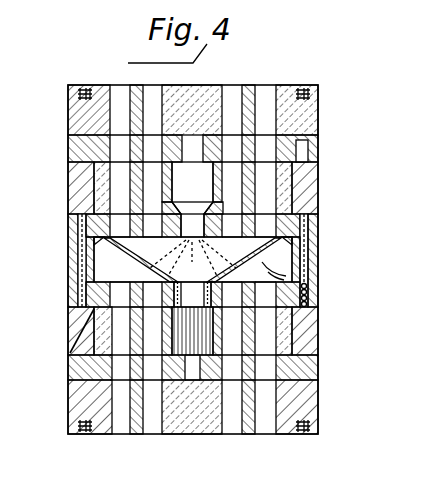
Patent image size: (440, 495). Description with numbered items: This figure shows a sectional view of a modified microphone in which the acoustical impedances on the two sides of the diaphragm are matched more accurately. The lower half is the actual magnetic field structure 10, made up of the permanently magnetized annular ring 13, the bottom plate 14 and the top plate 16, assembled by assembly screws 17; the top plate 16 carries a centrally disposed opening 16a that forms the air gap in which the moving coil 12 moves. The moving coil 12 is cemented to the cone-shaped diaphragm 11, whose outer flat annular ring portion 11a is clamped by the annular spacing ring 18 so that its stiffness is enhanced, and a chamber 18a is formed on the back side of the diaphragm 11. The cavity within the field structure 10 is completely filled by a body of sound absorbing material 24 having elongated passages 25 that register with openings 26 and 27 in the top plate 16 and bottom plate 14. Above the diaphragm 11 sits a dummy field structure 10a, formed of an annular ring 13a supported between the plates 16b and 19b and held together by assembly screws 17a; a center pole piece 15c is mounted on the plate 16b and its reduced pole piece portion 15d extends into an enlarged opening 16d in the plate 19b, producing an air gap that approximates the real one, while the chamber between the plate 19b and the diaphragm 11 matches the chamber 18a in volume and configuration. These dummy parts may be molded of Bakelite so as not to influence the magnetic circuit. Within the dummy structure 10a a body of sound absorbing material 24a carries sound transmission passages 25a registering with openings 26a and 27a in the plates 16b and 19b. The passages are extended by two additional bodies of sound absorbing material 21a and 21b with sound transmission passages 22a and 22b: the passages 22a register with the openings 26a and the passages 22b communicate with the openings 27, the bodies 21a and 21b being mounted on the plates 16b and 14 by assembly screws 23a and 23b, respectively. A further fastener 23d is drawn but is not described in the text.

The magnetic field structure 10 is at (266, 434).
The dummy field structure 10a is at (56, 188).
The cone-shaped diaphragm 11 is at (318, 246).
The outer flat annular ring portion 11a is at (72, 267).
The moving coil 12 is at (156, 262).
The permanently magnetized annular ring 13 is at (72, 330).
The annular ring 13a is at (318, 177).
The bottom plate 14 is at (70, 377).
The center pole piece 15c is at (192, 188).
The pole piece portion 15d is at (196, 225).
The top plate 16 is at (318, 300).
The centrally disposed opening 16a is at (318, 325).
The plate 16b is at (318, 146).
The enlarged opening 16d is at (193, 258).
The assembly screws 17 is at (68, 355).
The assembly screws 17a is at (72, 215).
The annular spacing ring 18 is at (318, 268).
The chamber 18a is at (318, 286).
The plate 19b is at (318, 219).
The body of sound absorbing material 21a is at (74, 93).
The body of sound absorbing material 21b is at (70, 407).
The sound transmission passages 22a is at (252, 88).
The sound transmission passages 22b is at (123, 432).
The assembly screws 23a is at (92, 68).
The assembly screws 23b is at (88, 435).
The fastener 23d is at (306, 90).
The body of sound absorbing material 24 is at (68, 315).
The body of sound absorbing material 24a is at (318, 188).
The elongated passages 25 is at (318, 383).
The sound transmission passages 25a is at (68, 174).
The openings 26 is at (264, 280).
The openings 26a is at (88, 137).
The openings 27 is at (318, 400).
The openings 27a is at (76, 234).